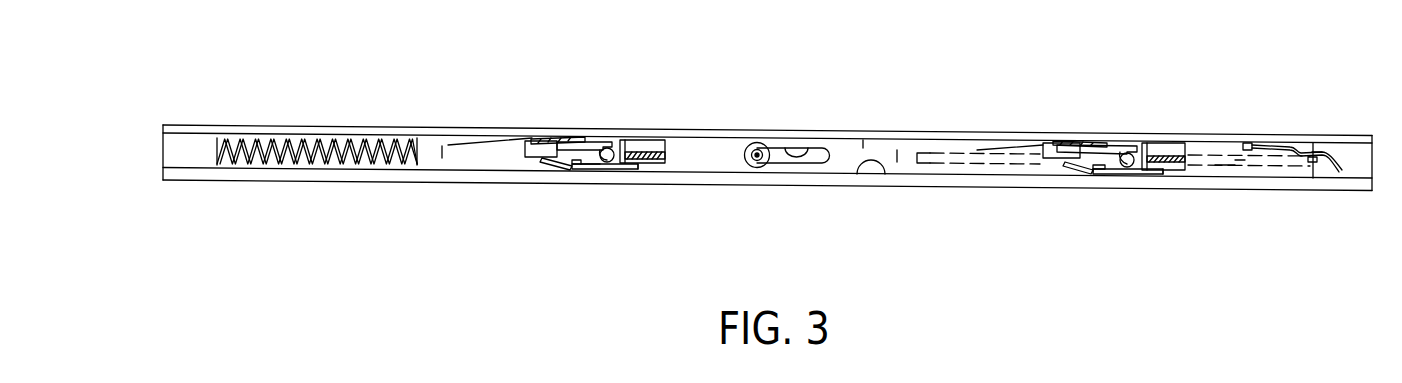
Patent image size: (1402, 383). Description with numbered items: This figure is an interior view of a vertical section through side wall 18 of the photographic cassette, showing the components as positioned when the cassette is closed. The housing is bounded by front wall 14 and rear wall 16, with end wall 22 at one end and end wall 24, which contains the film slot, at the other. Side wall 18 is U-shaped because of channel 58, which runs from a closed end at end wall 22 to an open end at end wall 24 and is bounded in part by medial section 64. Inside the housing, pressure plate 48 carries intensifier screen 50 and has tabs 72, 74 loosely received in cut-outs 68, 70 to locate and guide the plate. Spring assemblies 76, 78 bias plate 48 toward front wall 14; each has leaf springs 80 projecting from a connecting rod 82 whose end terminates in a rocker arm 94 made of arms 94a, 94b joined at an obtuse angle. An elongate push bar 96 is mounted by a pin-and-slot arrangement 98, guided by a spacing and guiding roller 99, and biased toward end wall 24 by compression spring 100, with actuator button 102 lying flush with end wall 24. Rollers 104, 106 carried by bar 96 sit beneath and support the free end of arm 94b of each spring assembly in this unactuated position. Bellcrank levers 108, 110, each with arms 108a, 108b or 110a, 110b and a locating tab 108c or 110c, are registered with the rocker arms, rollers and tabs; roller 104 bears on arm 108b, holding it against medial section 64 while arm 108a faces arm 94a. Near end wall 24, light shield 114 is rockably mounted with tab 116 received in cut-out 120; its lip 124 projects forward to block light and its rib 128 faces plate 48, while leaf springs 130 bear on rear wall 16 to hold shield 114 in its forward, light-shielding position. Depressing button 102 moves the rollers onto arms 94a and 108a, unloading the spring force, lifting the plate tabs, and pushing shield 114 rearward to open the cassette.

The front wall 14 is at (282, 181).
The rear wall 16 is at (347, 126).
The side wall 18 is at (806, 197).
The end wall 22 is at (163, 152).
The end wall 24 is at (1372, 167).
The pressure plate 48 is at (943, 152).
The intensifier screen 50 is at (1240, 165).
The channel 58 is at (863, 147).
The medial section 64 is at (885, 175).
The cut-out 68 is at (1173, 142).
The cut-out 70 is at (657, 143).
The tab 72 is at (1160, 152).
The tab 74 is at (647, 145).
The spring assembly 76 is at (1055, 143).
The spring assembly 78 is at (533, 142).
The leaf springs 80 is at (472, 143).
The connecting rod 82 is at (558, 137).
The rocker arm 94 is at (583, 142).
The arm 94a is at (537, 167).
The arm 94b is at (587, 142).
The push bar 96 is at (897, 157).
The pin-and-slot arrangement 98 is at (784, 148).
The spacing and guiding roller 99 is at (752, 144).
The compression spring 100 is at (253, 141).
The actuator button 102 is at (1328, 172).
The roller 104 is at (1140, 170).
The roller 106 is at (607, 167).
The bellcrank lever 108 is at (1117, 172).
The arm 108a is at (1073, 167).
The arm 108b is at (1140, 166).
The tab 108c is at (1100, 172).
The bellcrank lever 110 is at (560, 170).
The arm 110a is at (552, 165).
The arm 110b is at (620, 172).
The tab 110c is at (568, 172).
The light shield 114 is at (1327, 152).
The tab 116 is at (1250, 143).
The cut-out 120 is at (1223, 160).
The lip 124 is at (1367, 135).
The rib 128 is at (1290, 157).
The leaf springs 130 is at (1320, 146).